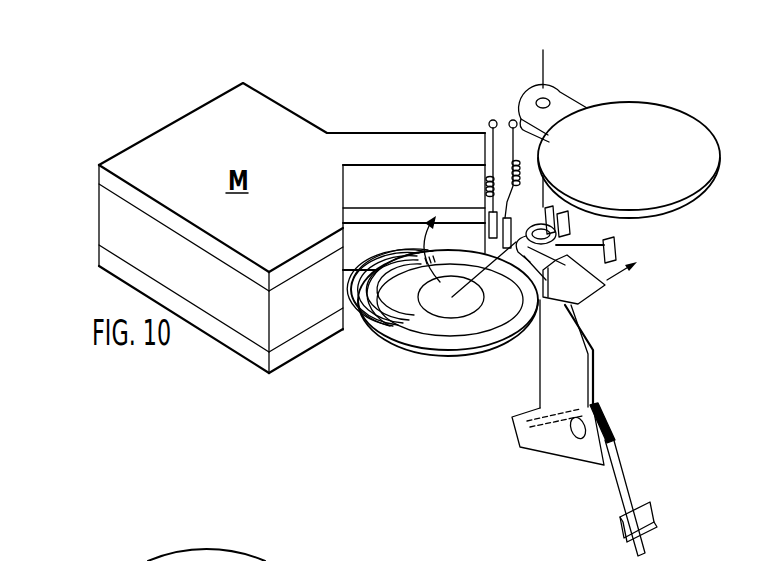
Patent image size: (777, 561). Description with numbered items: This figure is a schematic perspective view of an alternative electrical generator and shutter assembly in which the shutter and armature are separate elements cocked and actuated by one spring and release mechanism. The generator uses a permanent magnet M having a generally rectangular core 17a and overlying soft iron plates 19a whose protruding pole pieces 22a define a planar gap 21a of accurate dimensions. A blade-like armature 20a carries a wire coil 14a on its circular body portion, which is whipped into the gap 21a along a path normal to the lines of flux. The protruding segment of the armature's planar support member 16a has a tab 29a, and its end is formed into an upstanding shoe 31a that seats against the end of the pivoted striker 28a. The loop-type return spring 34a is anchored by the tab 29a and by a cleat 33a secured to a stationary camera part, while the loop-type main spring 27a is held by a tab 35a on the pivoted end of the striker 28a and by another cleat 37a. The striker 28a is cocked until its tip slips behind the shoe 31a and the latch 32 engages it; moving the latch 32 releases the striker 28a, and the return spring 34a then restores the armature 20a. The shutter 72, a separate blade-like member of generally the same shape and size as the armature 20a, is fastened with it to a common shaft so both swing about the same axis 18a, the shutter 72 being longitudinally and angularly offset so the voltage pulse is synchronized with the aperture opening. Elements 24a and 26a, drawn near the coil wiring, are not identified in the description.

The wire coil 14a is at (413, 324).
The planar support member 16a is at (488, 346).
The rectangular core 17a is at (107, 218).
The axis 18a is at (543, 50).
The soft iron plates 19a is at (159, 136).
The armature 20a is at (455, 354).
The planar gap 21a is at (360, 216).
The pole pieces 22a is at (366, 139).
The coils 24a is at (512, 178).
The lead wires 26a is at (512, 119).
The main spring 27a is at (611, 459).
The striker 28a is at (583, 378).
The tab 29a is at (500, 248).
The upstanding shoe 31a is at (573, 228).
The latch 32 is at (607, 287).
The cleat 33a is at (617, 250).
The return spring 34a is at (602, 236).
The tab 35a is at (525, 415).
The cleat 37a is at (645, 520).
The shutter 72 is at (602, 112).